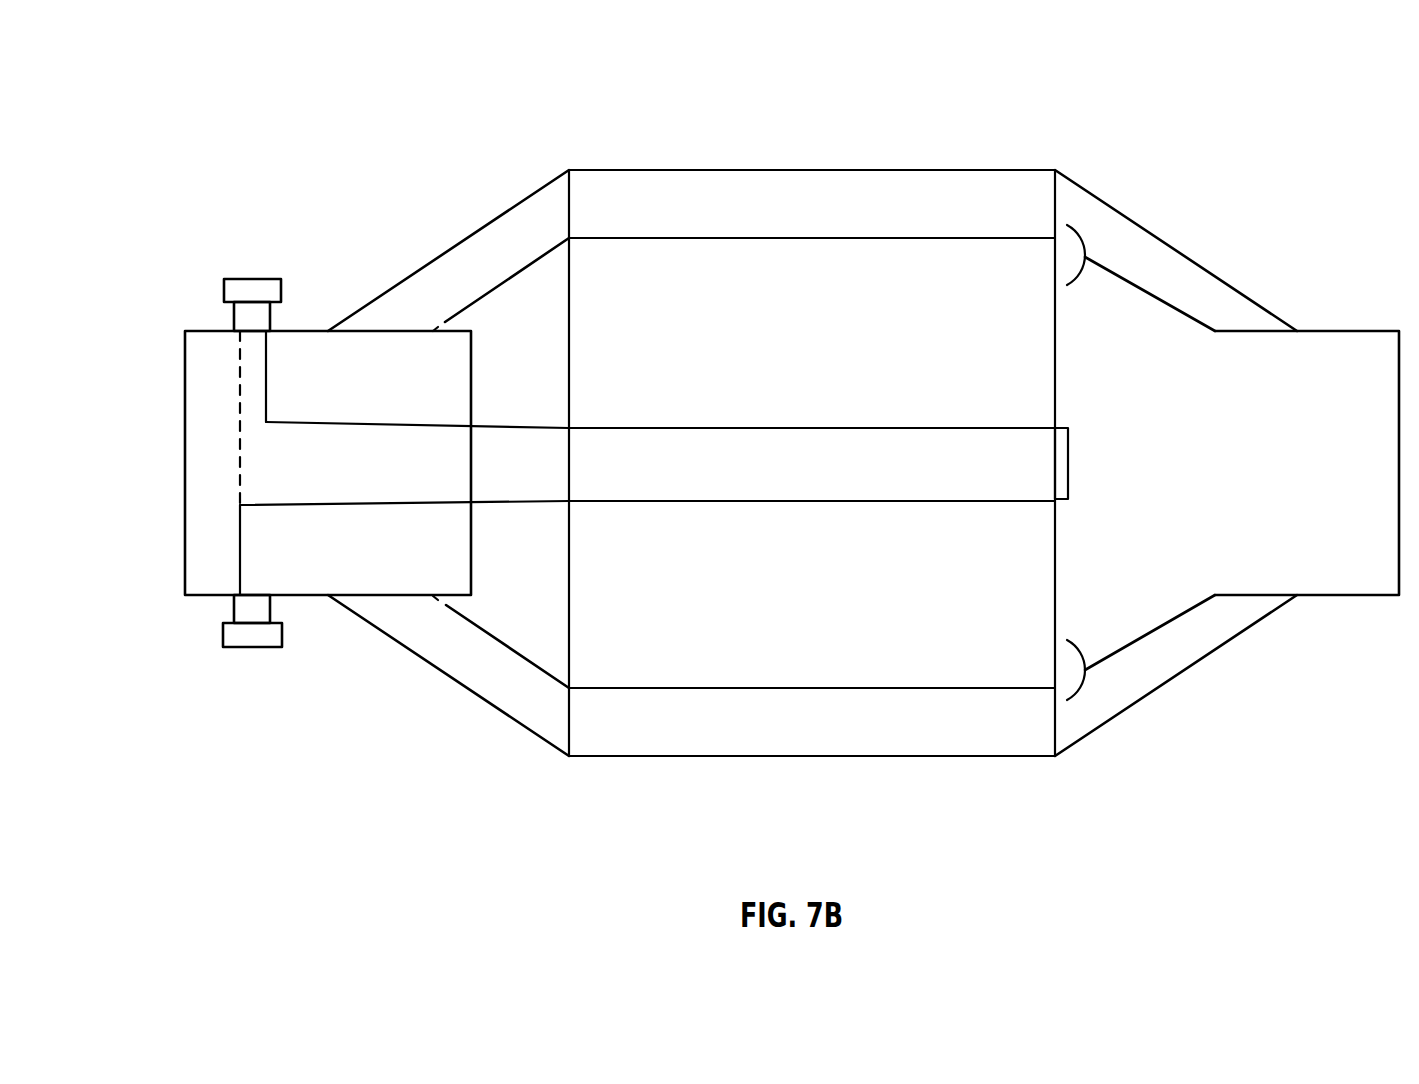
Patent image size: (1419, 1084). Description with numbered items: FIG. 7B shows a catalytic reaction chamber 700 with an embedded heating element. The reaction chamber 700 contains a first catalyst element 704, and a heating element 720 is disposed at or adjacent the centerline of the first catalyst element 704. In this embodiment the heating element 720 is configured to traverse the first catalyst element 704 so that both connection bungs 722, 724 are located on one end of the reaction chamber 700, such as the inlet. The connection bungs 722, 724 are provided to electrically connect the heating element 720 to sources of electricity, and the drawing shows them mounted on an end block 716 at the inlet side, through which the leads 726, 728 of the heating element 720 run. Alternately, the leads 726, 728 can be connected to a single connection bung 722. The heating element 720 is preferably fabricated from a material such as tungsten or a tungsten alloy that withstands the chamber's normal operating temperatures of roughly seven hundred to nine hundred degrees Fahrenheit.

The reaction chamber 700 is at (1310, 107).
The first catalyst element 704 is at (780, 357).
The mounting block 716 is at (292, 370).
The heating element 720 is at (887, 427).
The connection bung 722 is at (252, 292).
The connection bung 724 is at (252, 637).
The lead 726 is at (532, 427).
The lead 728 is at (238, 418).